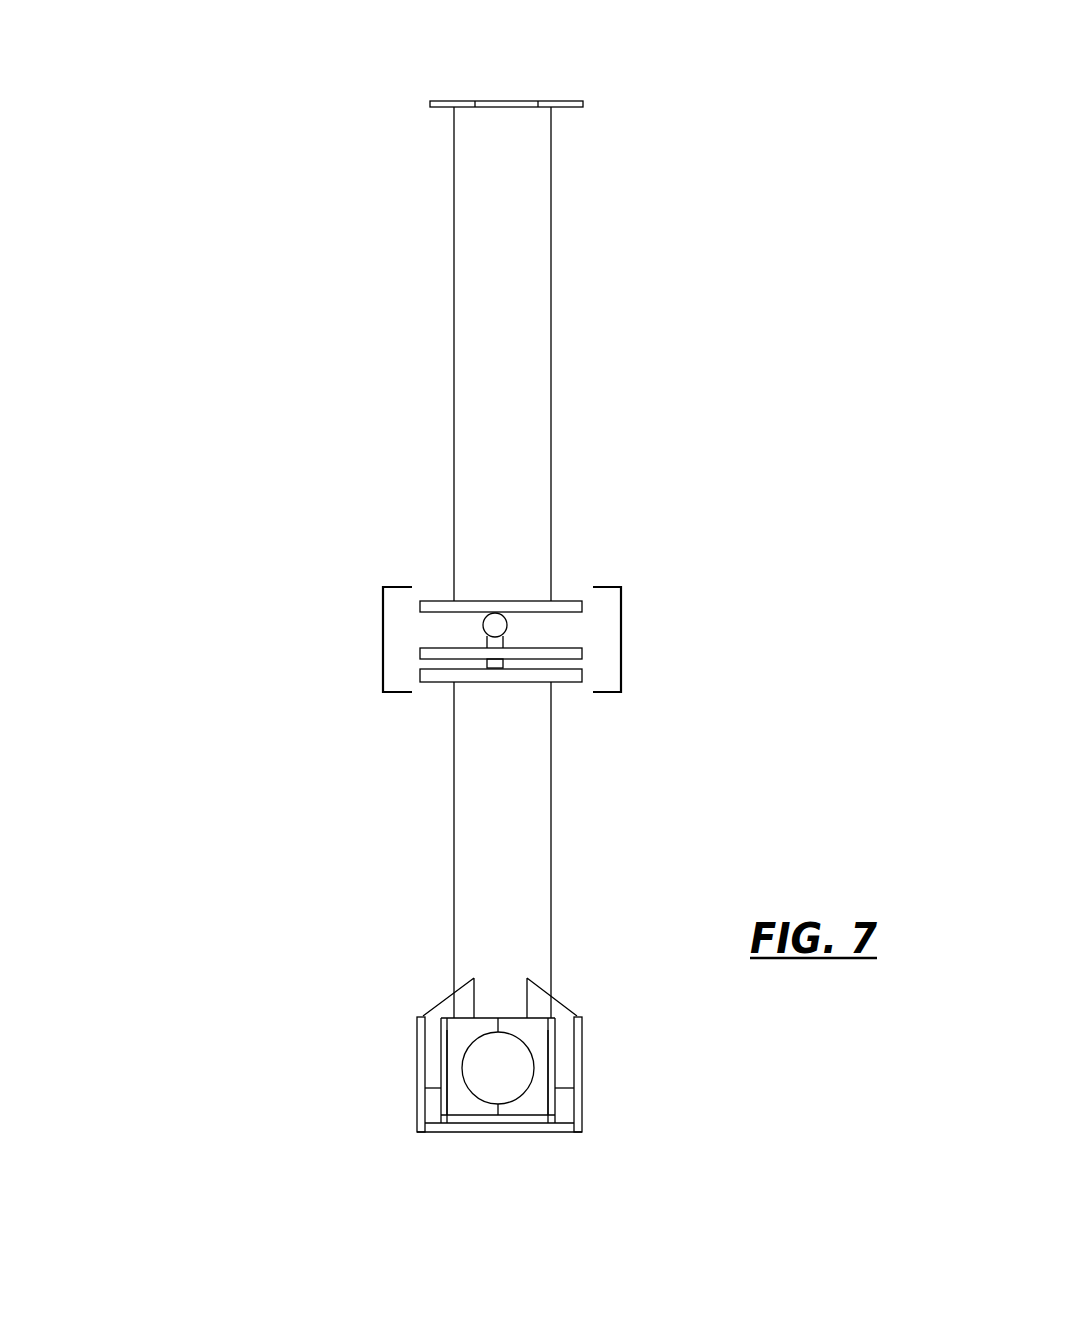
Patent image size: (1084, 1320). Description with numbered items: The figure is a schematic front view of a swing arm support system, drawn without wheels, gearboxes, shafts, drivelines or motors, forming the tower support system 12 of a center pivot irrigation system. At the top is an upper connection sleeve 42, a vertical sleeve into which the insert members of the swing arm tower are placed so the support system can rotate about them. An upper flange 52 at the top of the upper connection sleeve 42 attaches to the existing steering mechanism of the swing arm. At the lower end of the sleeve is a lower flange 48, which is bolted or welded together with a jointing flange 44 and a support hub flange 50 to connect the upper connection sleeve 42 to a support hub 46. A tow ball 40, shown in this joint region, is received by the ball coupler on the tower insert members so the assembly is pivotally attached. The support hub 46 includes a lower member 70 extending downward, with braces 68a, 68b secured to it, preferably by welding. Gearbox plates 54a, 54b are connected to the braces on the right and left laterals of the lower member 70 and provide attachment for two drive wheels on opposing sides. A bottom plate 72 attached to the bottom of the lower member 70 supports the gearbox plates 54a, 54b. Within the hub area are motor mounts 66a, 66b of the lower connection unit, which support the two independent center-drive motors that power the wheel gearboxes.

The tower support system 12 is at (498, 621).
The tow ball 40 is at (497, 625).
The upper connection sleeve 42 is at (496, 365).
The jointing flange 44 is at (430, 653).
The support hub 46 is at (420, 625).
The lower flange 48 is at (567, 605).
The support hub flange 50 is at (573, 682).
The upper flange 52 is at (573, 102).
The gearbox plate 54a is at (420, 1068).
The gearbox plate 54b is at (578, 1062).
The motor mount 66a is at (463, 1103).
The motor mount 66b is at (530, 1107).
The brace 68a is at (448, 1012).
The brace 68b is at (555, 1007).
The lower member 70 is at (487, 848).
The bottom plate 72 is at (465, 1130).